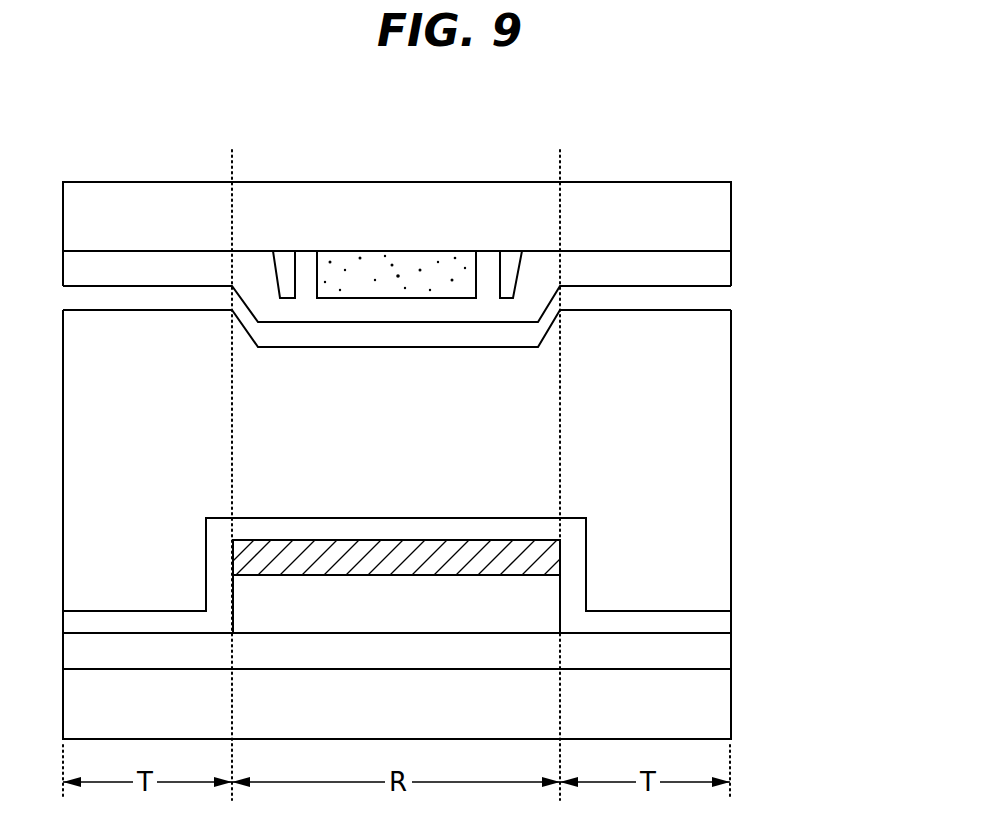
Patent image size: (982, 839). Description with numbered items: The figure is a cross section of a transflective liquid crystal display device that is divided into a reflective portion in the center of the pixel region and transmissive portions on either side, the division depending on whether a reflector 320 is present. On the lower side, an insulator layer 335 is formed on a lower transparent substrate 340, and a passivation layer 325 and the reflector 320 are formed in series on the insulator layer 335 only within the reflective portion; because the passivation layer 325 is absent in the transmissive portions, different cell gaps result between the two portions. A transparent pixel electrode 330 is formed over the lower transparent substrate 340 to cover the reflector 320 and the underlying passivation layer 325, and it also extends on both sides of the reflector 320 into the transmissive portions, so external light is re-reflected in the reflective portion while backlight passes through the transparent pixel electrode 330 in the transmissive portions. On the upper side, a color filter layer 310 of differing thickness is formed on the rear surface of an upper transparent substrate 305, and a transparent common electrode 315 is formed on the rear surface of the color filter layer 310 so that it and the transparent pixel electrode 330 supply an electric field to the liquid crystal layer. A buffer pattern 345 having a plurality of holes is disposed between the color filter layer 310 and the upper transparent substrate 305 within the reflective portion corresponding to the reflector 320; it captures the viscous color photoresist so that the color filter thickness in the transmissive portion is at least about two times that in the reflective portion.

The upper transparent substrate 305 is at (731, 232).
The color filter layer 310 is at (731, 267).
The transparent common electrode 315 is at (731, 302).
The reflector 320 is at (560, 558).
The passivation layer 325 is at (560, 597).
The transparent pixel electrode 330 is at (731, 615).
The insulator layer 335 is at (731, 652).
The lower transparent substrate 340 is at (731, 707).
The buffer pattern 345 is at (397, 252).